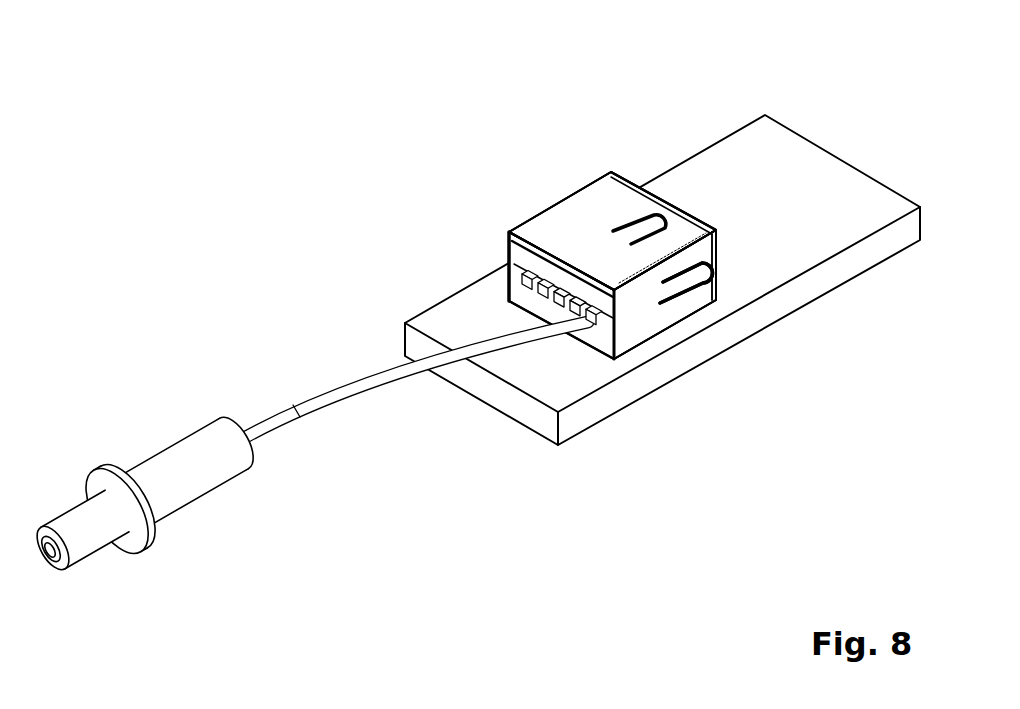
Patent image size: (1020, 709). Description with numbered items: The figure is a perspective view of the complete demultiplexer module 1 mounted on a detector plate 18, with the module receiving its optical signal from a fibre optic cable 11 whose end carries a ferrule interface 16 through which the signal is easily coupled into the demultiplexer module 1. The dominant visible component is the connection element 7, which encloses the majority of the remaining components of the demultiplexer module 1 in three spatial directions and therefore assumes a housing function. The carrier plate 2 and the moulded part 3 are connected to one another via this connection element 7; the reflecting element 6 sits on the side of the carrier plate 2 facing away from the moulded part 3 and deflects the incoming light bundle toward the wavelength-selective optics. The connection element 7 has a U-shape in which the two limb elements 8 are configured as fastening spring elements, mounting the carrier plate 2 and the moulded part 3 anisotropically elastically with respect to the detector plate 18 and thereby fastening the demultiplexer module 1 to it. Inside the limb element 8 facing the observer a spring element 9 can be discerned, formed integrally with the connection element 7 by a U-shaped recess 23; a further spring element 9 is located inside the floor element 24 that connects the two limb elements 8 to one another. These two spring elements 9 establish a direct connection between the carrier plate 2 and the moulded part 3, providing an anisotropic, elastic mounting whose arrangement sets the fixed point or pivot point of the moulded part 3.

The demultiplexer module 1 is at (581, 215).
The carrier plate 2 is at (522, 250).
The moulded part 3 is at (723, 258).
The reflecting element 6 is at (541, 292).
The connection element 7 is at (602, 202).
The limb element 8 is at (633, 312).
The spring element 9 is at (645, 213).
The fibre optic cable 11 is at (590, 323).
The ferrule interface 16 is at (185, 468).
The detector plate 18 is at (747, 170).
The U-shaped recess 23 is at (680, 298).
The floor element 24 is at (545, 235).